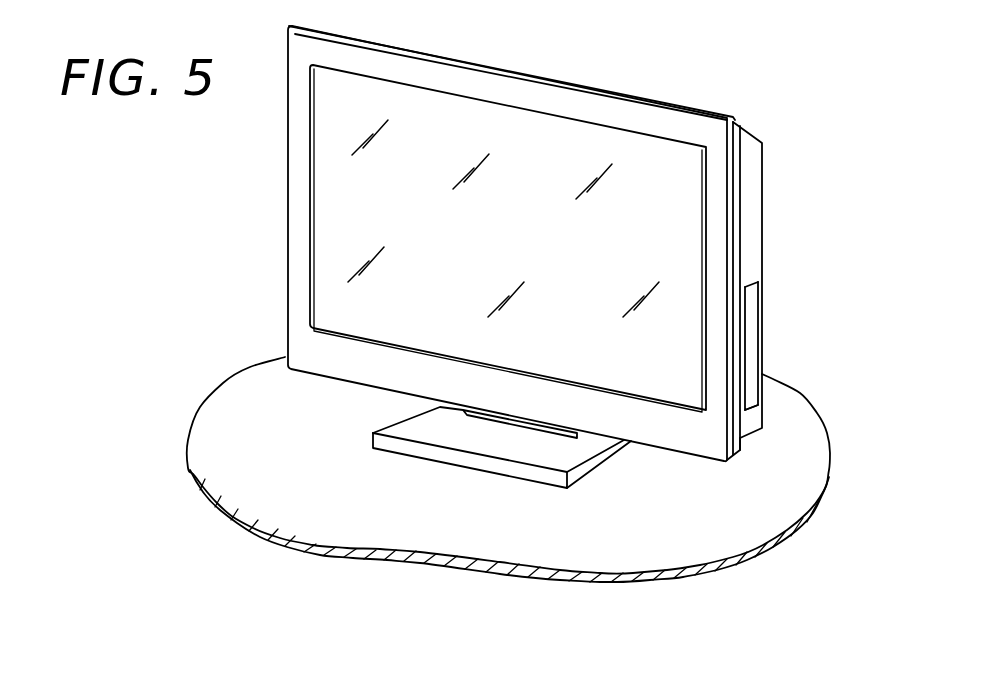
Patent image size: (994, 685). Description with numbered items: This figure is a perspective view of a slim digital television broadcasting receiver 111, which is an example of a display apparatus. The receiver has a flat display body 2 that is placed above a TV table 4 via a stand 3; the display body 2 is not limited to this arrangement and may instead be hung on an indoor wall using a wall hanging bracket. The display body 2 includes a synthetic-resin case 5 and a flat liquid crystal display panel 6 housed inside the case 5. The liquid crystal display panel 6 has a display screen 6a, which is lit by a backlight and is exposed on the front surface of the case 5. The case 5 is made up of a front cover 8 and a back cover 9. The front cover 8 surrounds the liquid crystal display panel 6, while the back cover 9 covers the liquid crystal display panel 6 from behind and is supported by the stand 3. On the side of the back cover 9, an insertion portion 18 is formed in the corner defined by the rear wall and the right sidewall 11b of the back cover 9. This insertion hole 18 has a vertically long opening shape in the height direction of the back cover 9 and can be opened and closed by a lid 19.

The display body 2 is at (525, 238).
The stand 3 is at (500, 457).
The TV table 4 is at (203, 437).
The case 5 is at (799, 132).
The liquid crystal display panel 6 is at (511, 127).
The display screen 6a is at (463, 244).
The front cover 8 is at (718, 161).
The back cover 9 is at (758, 192).
The right sidewall 11b is at (749, 240).
The insertion portion 18 is at (745, 291).
The lid 19 is at (748, 338).
The digital television broadcasting receiver 111 is at (633, 91).